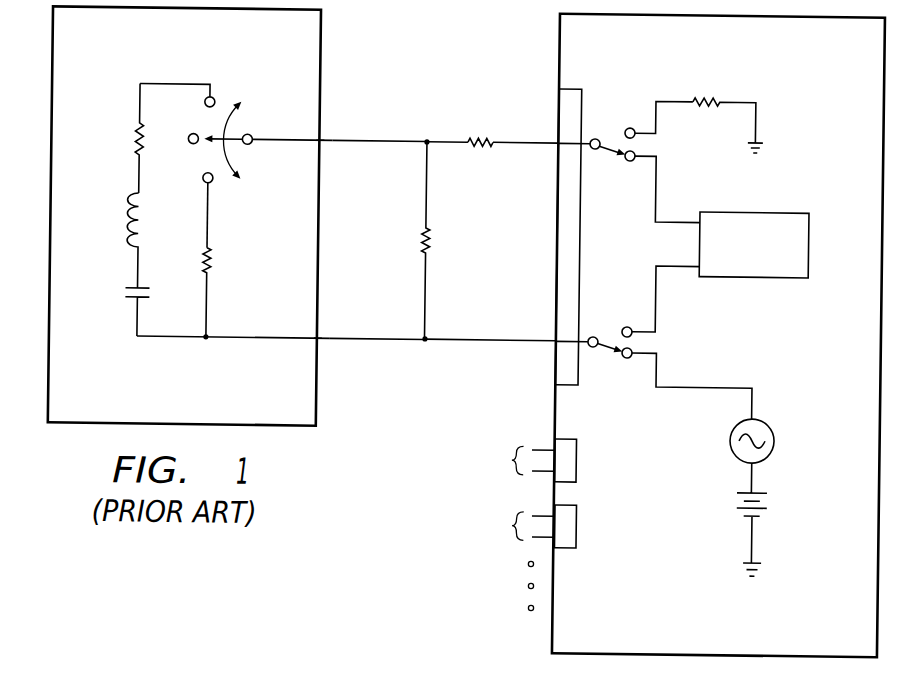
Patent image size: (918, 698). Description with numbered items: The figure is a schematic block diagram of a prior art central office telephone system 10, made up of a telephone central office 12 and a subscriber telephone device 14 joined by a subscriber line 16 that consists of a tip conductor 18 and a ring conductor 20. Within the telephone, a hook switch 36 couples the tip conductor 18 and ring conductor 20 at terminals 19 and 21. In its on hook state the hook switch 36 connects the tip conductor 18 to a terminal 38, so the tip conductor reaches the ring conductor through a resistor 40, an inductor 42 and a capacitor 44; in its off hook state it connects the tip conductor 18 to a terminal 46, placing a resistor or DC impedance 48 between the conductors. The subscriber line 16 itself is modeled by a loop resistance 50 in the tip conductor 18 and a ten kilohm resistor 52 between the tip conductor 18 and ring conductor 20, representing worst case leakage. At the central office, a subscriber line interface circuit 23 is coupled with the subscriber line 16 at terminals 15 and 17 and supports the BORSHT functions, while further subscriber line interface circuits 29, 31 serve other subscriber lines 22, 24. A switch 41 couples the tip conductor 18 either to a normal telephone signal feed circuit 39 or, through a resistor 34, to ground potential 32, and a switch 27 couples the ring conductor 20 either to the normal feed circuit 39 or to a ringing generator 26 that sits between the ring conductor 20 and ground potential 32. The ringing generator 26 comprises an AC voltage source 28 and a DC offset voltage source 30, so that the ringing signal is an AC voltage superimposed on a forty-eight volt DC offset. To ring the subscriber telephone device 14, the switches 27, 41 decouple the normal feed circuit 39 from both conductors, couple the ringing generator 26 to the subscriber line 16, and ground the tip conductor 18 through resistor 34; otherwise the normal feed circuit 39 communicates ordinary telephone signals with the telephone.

The central office telephone system 10 is at (386, 465).
The telephone central office 12 is at (855, 81).
The subscriber telephone device 14 is at (77, 68).
The terminal 15 is at (555, 139).
The subscriber line 16 is at (467, 342).
The terminal 17 is at (553, 341).
The tip conductor 18 is at (330, 144).
The terminal 19 is at (318, 145).
The ring conductor 20 is at (330, 339).
The terminal 21 is at (318, 344).
The other subscriber line 22 is at (517, 461).
The subscriber line interface circuit 23 is at (562, 264).
The other subscriber line 24 is at (517, 526).
The ringing generator 26 is at (795, 383).
The switch 27 is at (612, 330).
The AC voltage source 28 is at (731, 439).
The subscriber line interface circuit 29 is at (579, 458).
The DC offset voltage source 30 is at (769, 503).
The subscriber line interface circuit 31 is at (580, 526).
The ground potential 32 is at (768, 143).
The resistor 34 is at (700, 95).
The hook switch 36 is at (195, 76).
The terminal 38 is at (210, 100).
The normal telephone signal feed circuit 39 is at (809, 239).
The resistor 40 is at (133, 142).
The switch 41 is at (613, 135).
The inductor 42 is at (127, 222).
The capacitor 44 is at (125, 299).
The terminal 46 is at (205, 185).
The resistor or DC impedance 48 is at (211, 265).
The loop resistance 50 is at (483, 148).
The 10 K ohm resistor 52 is at (422, 240).